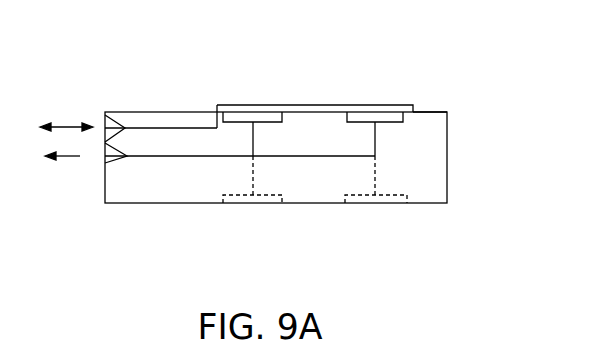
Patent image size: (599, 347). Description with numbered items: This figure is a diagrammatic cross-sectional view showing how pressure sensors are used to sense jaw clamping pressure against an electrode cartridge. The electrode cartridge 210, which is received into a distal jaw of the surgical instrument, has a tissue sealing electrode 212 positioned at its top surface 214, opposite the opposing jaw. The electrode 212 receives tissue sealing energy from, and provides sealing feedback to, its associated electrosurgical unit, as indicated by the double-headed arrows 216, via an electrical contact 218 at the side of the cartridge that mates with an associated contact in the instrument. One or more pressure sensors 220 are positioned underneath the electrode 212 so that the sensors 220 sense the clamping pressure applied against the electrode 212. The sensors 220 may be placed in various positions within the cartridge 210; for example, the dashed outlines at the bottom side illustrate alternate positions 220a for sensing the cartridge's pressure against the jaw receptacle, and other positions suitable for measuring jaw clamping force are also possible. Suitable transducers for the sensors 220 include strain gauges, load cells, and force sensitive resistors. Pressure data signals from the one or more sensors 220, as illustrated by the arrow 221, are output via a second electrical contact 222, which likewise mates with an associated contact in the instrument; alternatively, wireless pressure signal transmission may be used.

The electrode cartridge 210 is at (447, 190).
The tissue sealing electrode 212 is at (355, 117).
The top surface 214 is at (432, 112).
The arrows 216 is at (68, 124).
The electrical contact 218 is at (114, 122).
The pressure sensors 220 is at (255, 105).
The alternate positions 220a is at (360, 203).
The arrow 221 is at (73, 161).
The electrical contact 222 is at (112, 160).